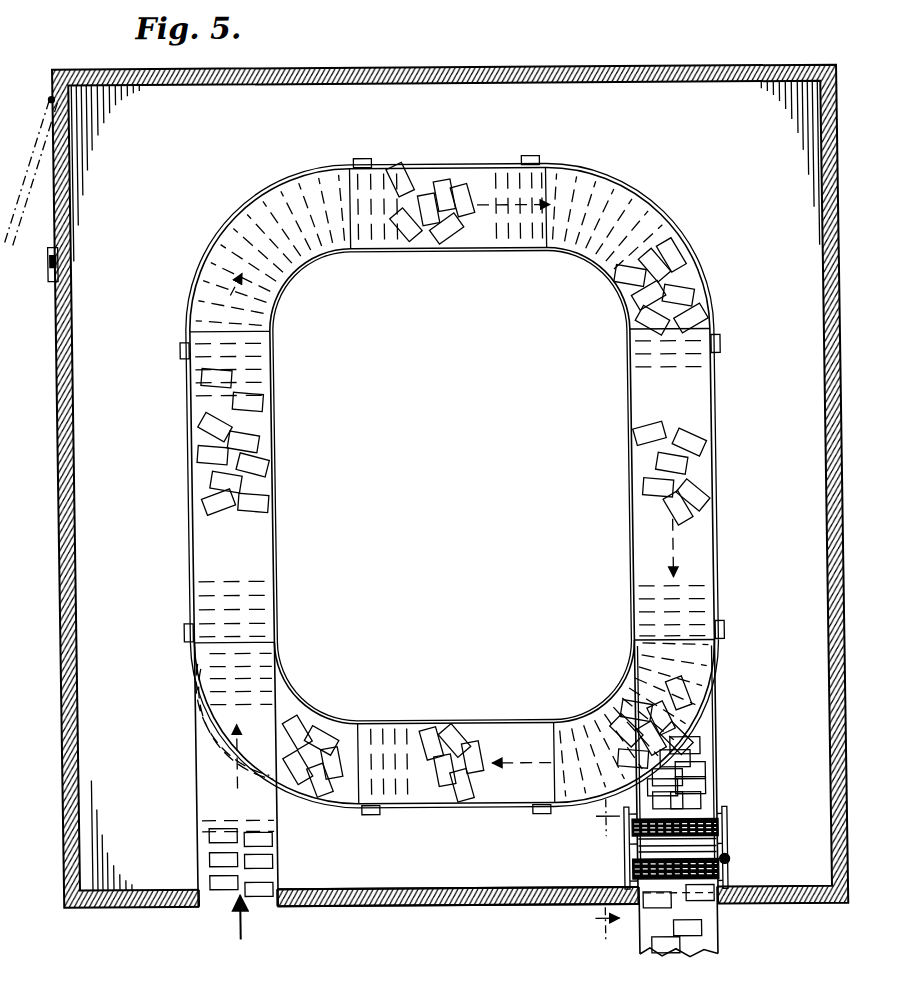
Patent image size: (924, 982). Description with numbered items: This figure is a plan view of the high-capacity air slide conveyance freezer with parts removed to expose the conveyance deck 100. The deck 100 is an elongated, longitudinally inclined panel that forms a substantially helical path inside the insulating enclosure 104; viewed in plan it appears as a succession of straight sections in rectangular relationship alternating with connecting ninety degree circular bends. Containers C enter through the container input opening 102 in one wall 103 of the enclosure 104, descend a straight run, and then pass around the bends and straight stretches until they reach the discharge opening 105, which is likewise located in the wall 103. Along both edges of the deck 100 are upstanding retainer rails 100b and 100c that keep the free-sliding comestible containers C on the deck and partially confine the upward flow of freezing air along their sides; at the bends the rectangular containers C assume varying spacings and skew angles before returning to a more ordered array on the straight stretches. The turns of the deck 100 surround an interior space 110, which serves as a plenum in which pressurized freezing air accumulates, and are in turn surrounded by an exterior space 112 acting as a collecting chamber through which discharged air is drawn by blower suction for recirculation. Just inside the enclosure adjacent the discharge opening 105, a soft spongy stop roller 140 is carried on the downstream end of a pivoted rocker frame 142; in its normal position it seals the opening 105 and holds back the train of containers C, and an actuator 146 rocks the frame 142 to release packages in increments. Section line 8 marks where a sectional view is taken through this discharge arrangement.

The enclosure 104 is at (556, 70).
The wall 103 is at (398, 902).
The exterior space 112 is at (463, 140).
The conveyance deck 100 is at (490, 191).
The retainer rail 100b is at (270, 559).
The retainer rail 100c is at (704, 553).
The interior space 110 is at (463, 482).
The container input opening 102 is at (209, 901).
The discharge opening 105 is at (687, 917).
The stop roller 140 is at (688, 819).
The rocker frame 142 is at (706, 837).
The actuator 146 is at (718, 860).
The section line 8 is at (600, 870).
The comestible containers C is at (696, 286).